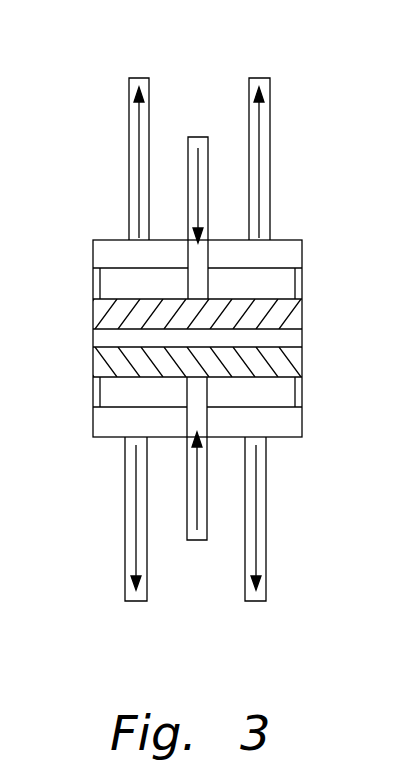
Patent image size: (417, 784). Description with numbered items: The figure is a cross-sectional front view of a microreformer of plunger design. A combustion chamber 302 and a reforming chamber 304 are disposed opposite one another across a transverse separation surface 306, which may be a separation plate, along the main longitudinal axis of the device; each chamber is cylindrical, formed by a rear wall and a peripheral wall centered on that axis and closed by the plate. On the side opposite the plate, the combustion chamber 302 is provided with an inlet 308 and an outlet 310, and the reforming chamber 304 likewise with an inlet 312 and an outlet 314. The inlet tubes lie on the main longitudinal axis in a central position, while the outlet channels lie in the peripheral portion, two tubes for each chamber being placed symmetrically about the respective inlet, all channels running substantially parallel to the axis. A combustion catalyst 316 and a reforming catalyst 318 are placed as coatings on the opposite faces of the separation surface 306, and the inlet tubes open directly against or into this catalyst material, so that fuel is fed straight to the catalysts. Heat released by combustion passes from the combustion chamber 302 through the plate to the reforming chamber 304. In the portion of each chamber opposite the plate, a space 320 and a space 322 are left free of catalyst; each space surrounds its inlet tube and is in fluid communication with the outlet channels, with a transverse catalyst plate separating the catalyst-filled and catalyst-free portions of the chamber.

The combustion chamber 302 is at (107, 280).
The reforming chamber 304 is at (107, 388).
The transverse separation surface 306 is at (93, 335).
The inlet 308 is at (186, 158).
The outlet 310 is at (128, 98).
The inlet 312 is at (186, 518).
The outlet 314 is at (123, 577).
The combustion catalyst 316 is at (303, 317).
The reforming catalyst 318 is at (303, 358).
The space 320 is at (287, 285).
The space 322 is at (287, 398).